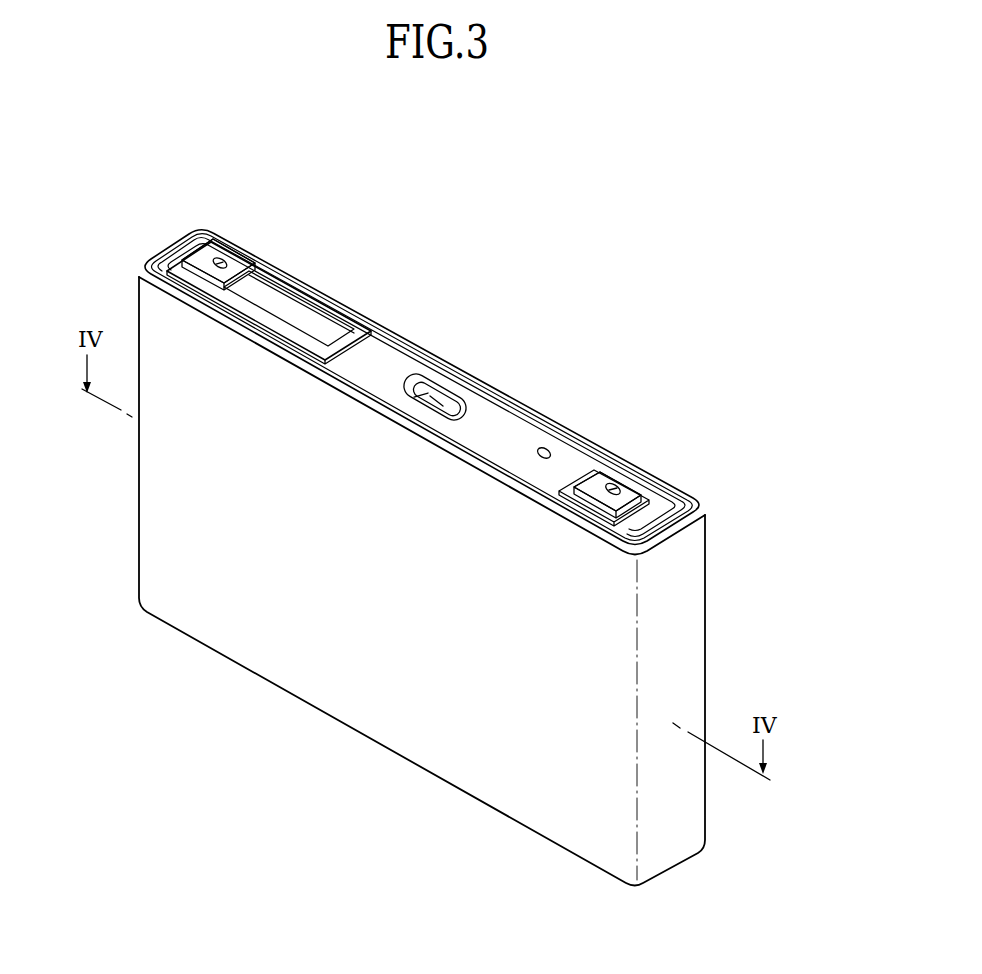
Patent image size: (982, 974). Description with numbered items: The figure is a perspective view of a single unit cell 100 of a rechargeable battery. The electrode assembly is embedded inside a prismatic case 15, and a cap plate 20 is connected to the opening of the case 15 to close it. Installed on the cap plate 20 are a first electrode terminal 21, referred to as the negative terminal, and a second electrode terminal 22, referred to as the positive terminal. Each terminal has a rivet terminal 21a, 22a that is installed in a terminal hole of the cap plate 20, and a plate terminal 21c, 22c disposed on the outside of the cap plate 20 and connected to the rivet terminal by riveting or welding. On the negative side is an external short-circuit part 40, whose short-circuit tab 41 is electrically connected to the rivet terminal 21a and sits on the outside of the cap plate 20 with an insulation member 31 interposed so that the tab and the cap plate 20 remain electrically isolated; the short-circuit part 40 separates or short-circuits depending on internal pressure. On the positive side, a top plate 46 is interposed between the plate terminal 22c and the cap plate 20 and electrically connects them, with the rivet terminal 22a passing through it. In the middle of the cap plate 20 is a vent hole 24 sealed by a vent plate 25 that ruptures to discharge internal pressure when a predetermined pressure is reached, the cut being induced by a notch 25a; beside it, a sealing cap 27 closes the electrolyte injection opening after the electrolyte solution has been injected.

The unit cell 100 is at (541, 255).
The case 15 is at (345, 690).
The cap plate 20 is at (393, 360).
The insulation member 31 is at (284, 285).
The external short-circuit part 40 is at (332, 294).
The short-circuit tab 41 is at (337, 332).
The first electrode terminal 21 is at (226, 250).
The plate terminal 21c is at (242, 266).
The rivet terminal 21a is at (213, 261).
The vent hole 24 is at (423, 378).
The vent plate 25 is at (438, 396).
The notch 25a is at (445, 406).
The sealing cap 27 is at (546, 450).
The top plate 46 is at (630, 519).
The second electrode terminal 22 is at (616, 476).
The plate terminal 22c is at (625, 497).
The rivet terminal 22a is at (622, 487).